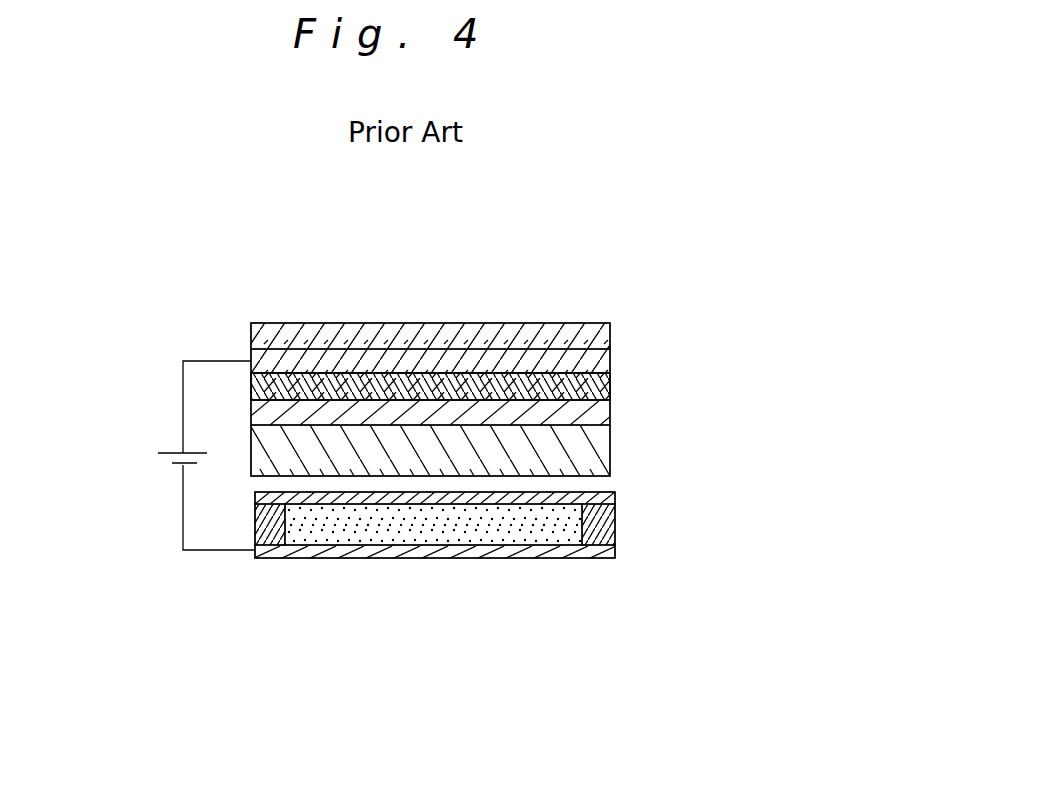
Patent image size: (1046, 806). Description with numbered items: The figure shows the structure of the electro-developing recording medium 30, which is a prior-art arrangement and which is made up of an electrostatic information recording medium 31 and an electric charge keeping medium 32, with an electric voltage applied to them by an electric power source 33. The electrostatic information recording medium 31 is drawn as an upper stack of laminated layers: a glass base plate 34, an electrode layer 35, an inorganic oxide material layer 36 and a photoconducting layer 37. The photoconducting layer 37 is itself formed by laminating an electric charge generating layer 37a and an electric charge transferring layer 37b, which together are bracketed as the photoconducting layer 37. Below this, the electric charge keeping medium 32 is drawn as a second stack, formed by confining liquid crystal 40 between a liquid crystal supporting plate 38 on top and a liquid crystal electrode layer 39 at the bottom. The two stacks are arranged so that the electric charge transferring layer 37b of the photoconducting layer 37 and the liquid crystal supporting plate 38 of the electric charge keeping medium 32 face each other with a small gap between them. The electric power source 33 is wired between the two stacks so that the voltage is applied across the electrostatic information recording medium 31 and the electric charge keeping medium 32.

The electro-developing recording medium 30 is at (172, 578).
The electrostatic information recording medium 31 is at (270, 321).
The electric charge keeping medium 32 is at (268, 567).
The electric power source 33 is at (178, 467).
The glass base plate 34 is at (553, 333).
The electrode layer 35 is at (406, 358).
The inorganic oxide material layer 36 is at (610, 358).
The photoconducting layer 37 is at (623, 402).
The electric charge generating layer 37a is at (610, 390).
The electric charge transferring layer 37b is at (610, 476).
The liquid crystal supporting plate 38 is at (378, 500).
The liquid crystal electrode layer 39 is at (558, 550).
The liquid crystal 40 is at (485, 540).